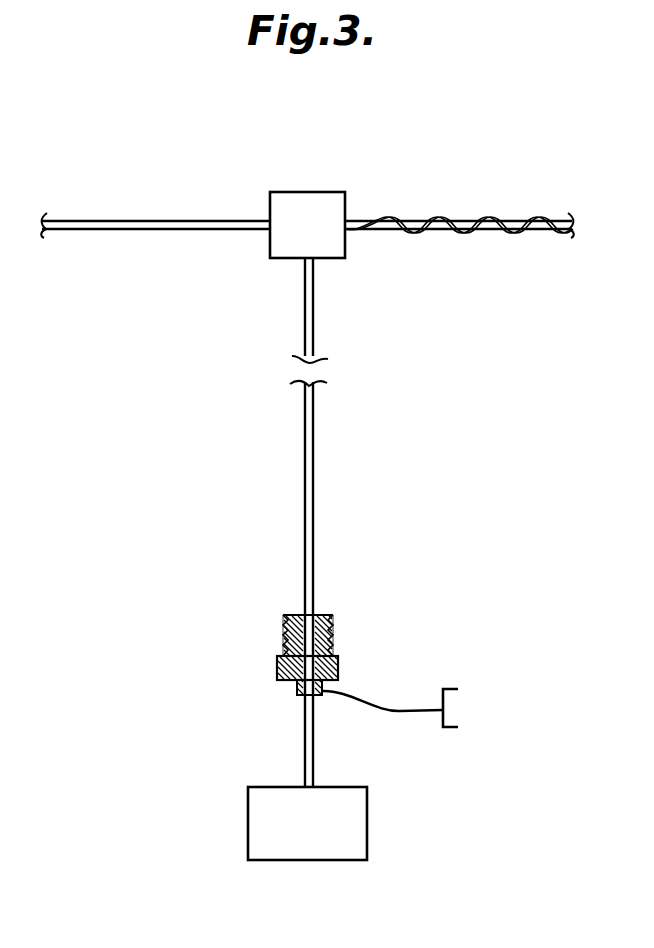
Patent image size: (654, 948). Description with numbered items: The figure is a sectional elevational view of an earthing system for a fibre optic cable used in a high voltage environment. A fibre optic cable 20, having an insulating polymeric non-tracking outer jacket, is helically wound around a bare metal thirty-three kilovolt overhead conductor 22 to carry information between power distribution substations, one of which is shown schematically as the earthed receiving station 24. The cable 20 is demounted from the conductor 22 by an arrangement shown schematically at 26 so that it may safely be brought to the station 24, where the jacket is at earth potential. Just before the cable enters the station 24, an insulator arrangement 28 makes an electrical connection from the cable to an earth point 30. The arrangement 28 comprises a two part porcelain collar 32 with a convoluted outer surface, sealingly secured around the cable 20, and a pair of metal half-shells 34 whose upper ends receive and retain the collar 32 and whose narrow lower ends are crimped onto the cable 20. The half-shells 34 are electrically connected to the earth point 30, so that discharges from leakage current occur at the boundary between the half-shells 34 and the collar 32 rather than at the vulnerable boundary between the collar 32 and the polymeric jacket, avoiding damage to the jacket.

The fibre optic cable 20 is at (467, 235).
The bare metal overhead conductor 22 is at (148, 231).
The power distribution substation 24 is at (326, 837).
The demounting arrangement 26 is at (305, 182).
The insulator arrangement 28 is at (334, 614).
The earth point 30 is at (452, 686).
The two part porcelain collar 32 is at (283, 640).
The metal half-shells 34 is at (290, 678).